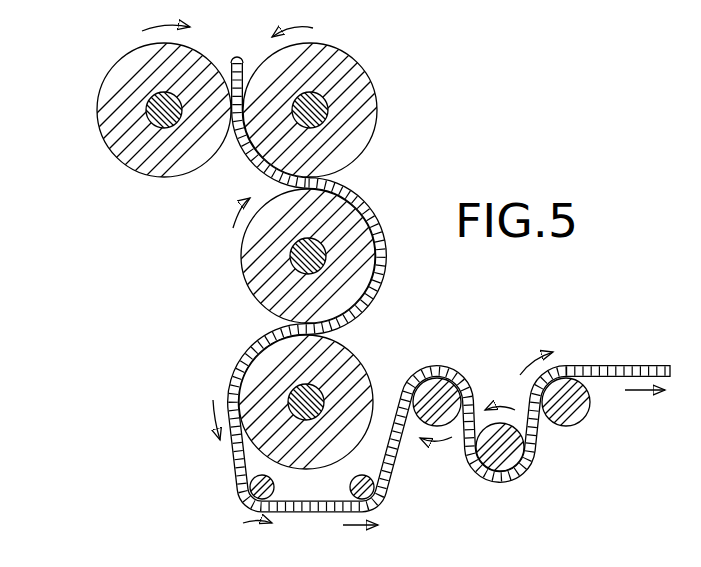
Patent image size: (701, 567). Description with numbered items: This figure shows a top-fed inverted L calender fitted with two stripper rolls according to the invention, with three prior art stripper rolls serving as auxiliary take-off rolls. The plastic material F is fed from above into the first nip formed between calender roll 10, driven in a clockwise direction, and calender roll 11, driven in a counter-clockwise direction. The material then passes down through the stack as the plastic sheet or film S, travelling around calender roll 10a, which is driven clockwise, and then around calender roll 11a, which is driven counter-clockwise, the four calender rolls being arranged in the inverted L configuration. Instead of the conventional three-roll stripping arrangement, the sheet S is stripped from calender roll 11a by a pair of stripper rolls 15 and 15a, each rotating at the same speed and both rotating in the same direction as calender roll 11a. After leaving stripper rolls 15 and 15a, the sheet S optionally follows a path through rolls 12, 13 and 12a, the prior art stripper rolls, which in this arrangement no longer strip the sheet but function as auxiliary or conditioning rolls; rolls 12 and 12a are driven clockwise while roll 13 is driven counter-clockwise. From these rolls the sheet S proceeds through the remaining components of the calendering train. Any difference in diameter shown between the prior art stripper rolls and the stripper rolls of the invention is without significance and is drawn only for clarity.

The plastic material F is at (237, 63).
The plastic sheet S is at (613, 371).
The calender roll 10 is at (105, 94).
The calender roll 11 is at (362, 99).
The calender roll 10a is at (256, 249).
The calender roll 11a is at (256, 384).
The stripper roll 12 is at (437, 395).
The stripper roll 12a is at (574, 418).
The stripper roll 13 is at (498, 457).
The stripper roll 15 is at (245, 497).
The stripper roll 15a is at (376, 501).